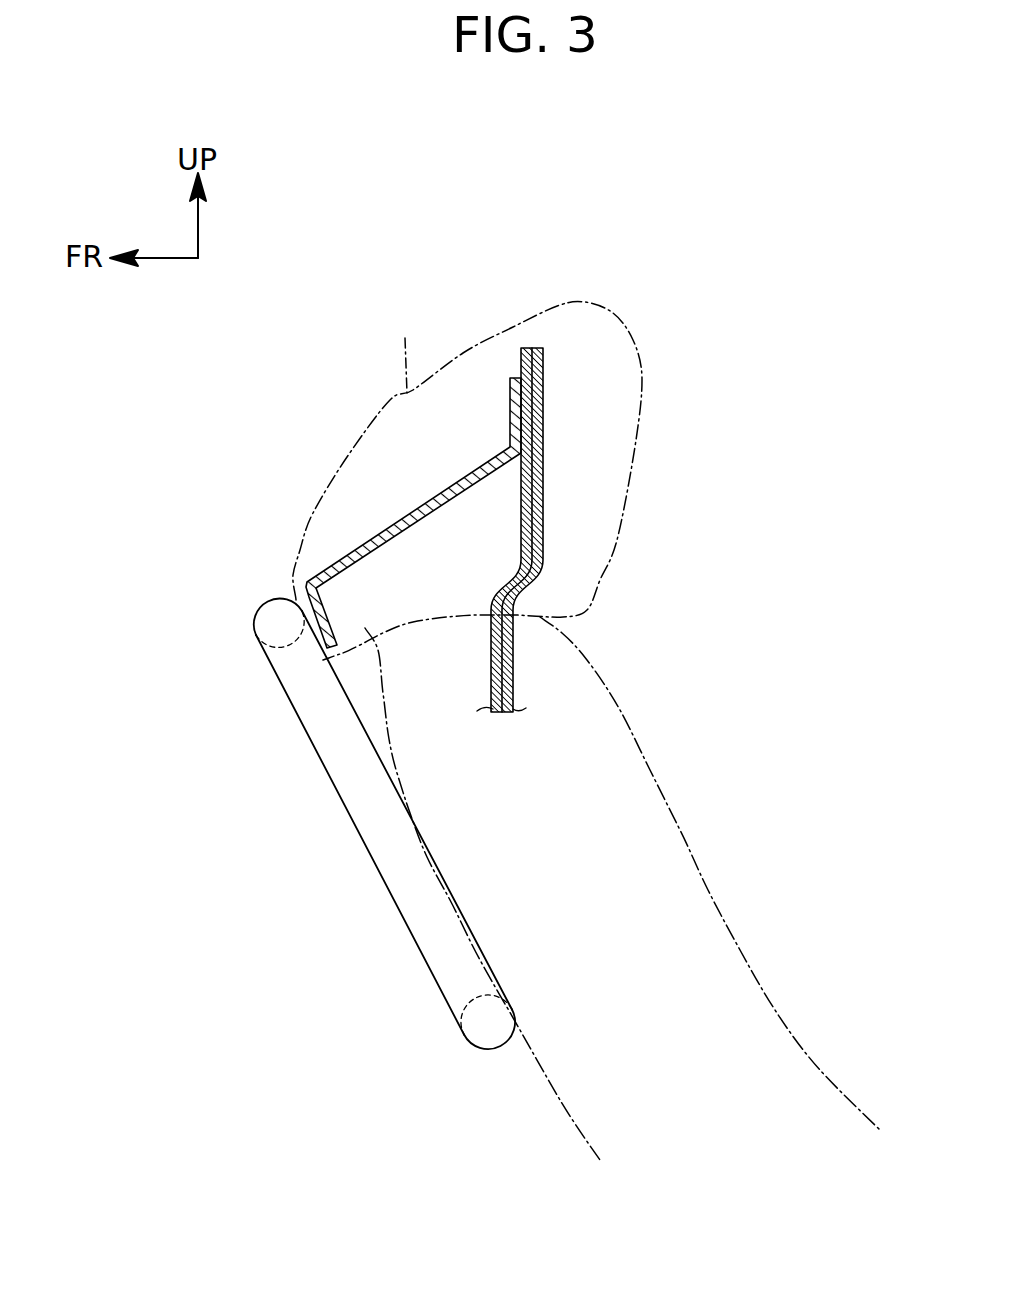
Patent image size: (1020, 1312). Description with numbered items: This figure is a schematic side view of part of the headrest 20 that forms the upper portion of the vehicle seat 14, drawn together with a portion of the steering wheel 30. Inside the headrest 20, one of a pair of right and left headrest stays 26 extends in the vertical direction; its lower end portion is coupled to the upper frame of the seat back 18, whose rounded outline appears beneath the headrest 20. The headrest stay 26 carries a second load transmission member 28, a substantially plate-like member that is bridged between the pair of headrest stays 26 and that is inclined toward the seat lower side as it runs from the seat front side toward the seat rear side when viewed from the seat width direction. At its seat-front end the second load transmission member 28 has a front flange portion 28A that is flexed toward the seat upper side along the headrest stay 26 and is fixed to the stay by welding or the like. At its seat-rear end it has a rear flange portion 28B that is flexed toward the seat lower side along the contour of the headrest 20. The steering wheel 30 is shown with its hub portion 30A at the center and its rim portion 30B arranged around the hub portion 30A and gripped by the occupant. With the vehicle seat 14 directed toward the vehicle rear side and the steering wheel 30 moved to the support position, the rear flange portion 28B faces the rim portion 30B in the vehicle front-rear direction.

The vehicle seat 14 is at (592, 306).
The seat back 18 is at (708, 886).
The headrest 20 is at (405, 338).
The headrest stay 26 is at (548, 512).
The second load transmission member 28 is at (421, 498).
The front flange portion 28A is at (510, 409).
The rear flange portion 28B is at (338, 627).
The steering wheel 30 is at (376, 816).
The hub portion 30A is at (428, 853).
The rim portion 30B is at (264, 598).